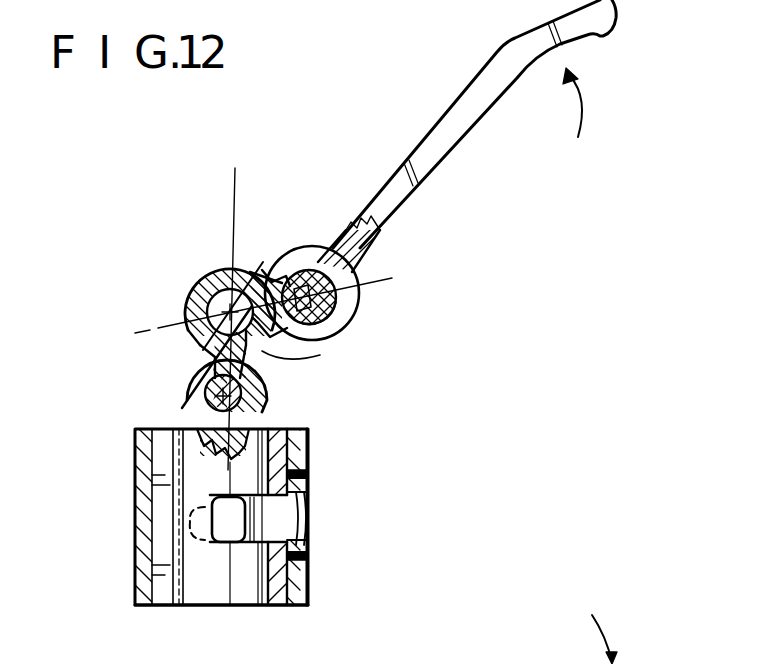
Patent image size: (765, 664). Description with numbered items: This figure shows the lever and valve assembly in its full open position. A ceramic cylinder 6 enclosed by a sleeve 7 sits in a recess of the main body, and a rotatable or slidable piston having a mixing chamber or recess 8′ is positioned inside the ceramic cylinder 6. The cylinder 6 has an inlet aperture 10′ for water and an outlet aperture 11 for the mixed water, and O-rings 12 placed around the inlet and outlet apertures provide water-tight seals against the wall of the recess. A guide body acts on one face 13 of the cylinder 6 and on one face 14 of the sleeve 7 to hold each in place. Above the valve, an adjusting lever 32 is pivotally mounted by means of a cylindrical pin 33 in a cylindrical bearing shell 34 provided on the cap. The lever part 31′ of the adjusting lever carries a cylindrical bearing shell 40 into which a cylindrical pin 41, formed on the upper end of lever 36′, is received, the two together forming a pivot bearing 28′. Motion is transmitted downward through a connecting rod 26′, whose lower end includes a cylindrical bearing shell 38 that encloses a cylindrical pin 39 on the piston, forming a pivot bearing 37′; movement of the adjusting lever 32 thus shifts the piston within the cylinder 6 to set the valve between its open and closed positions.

The ceramic cylinder 6 is at (285, 592).
The sleeve 7 is at (304, 585).
The mixing chamber or recess 8′ is at (232, 498).
The inlet aperture 10′ is at (182, 536).
The outlet aperture 11 is at (278, 517).
The O-rings 12 is at (302, 494).
The face of the cylinder 13 is at (283, 429).
The face of the sleeve 14 is at (300, 428).
The connecting rod 26′ is at (262, 351).
The pivot bearing 28′ is at (202, 348).
The lever part 31′ is at (265, 280).
The adjusting lever 32 is at (478, 103).
The cylindrical pin 33 is at (359, 300).
The cylindrical bearing shell 34 is at (307, 257).
The lever 36′ is at (336, 322).
The pivot bearing 37′ is at (201, 420).
The cylindrical bearing shell 38 is at (187, 384).
The cylindrical pin 39 is at (223, 396).
The cylindrical bearing shell 40 is at (210, 272).
The cylindrical pin 41 is at (207, 288).